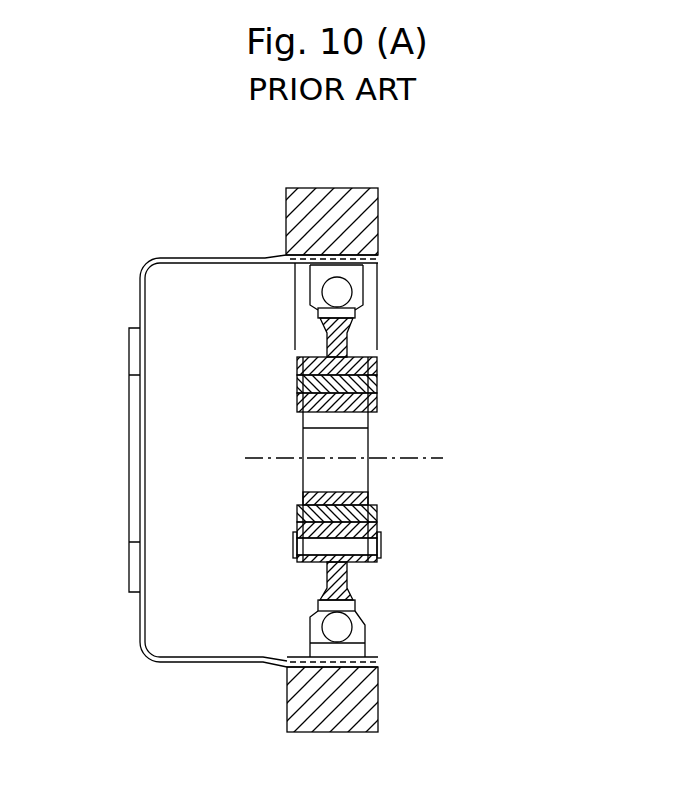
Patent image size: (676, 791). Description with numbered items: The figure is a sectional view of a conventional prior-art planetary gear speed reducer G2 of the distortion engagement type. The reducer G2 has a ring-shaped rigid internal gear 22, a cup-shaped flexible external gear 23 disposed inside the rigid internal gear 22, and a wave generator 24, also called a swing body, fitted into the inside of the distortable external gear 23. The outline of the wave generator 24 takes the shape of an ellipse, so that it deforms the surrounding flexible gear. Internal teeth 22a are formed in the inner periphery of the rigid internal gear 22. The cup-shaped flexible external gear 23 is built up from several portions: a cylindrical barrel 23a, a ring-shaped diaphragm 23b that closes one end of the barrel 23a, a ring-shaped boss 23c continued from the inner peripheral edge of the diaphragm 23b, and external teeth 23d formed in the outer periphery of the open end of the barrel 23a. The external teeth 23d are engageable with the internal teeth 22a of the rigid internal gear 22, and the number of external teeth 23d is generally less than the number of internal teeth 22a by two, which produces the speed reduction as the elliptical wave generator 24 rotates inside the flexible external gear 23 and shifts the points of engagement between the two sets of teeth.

The rigid internal gear 22 is at (365, 206).
The internal teeth 22a is at (366, 250).
The flexible external gear 23 is at (228, 400).
The cylindrical barrel 23a is at (221, 264).
The ring-shaped diaphragm 23b is at (140, 283).
The ring-shaped boss 23c is at (134, 366).
The external teeth 23d is at (303, 256).
The wave generator 24 is at (413, 437).
The planetary gear speed reducer G2 is at (385, 436).